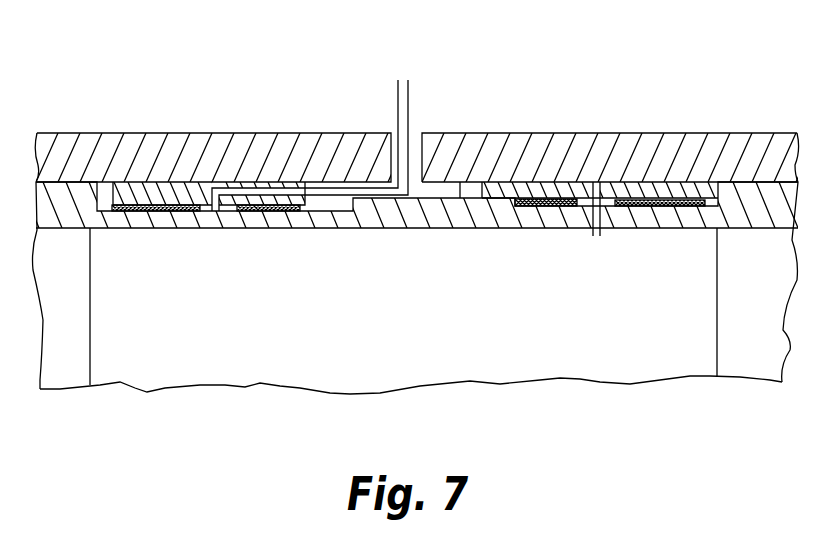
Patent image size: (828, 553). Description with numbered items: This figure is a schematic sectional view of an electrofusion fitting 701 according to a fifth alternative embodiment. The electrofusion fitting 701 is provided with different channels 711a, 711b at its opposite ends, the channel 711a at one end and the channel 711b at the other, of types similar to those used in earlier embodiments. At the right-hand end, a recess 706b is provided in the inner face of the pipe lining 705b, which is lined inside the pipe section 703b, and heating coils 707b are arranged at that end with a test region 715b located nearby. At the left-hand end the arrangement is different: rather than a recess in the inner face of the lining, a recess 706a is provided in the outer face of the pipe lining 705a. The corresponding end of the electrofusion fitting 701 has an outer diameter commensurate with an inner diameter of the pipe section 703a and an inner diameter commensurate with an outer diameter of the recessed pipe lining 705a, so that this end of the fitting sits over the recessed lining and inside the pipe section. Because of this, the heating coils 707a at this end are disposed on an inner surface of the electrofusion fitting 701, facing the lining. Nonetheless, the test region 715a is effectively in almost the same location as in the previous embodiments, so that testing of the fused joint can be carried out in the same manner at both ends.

The electrofusion fitting 701 is at (417, 217).
The pipe section 703a is at (73, 150).
The pipe section 703b is at (697, 157).
The pipe lining 705a is at (85, 195).
The pipe lining 705b is at (757, 205).
The recess 706a is at (118, 189).
The recess 706b is at (702, 219).
The heating coils 707a is at (190, 204).
The heating coils 707b is at (533, 205).
The channel 711a is at (323, 190).
The channel 711b is at (582, 220).
The test region 715a is at (216, 223).
The test region 715b is at (596, 172).